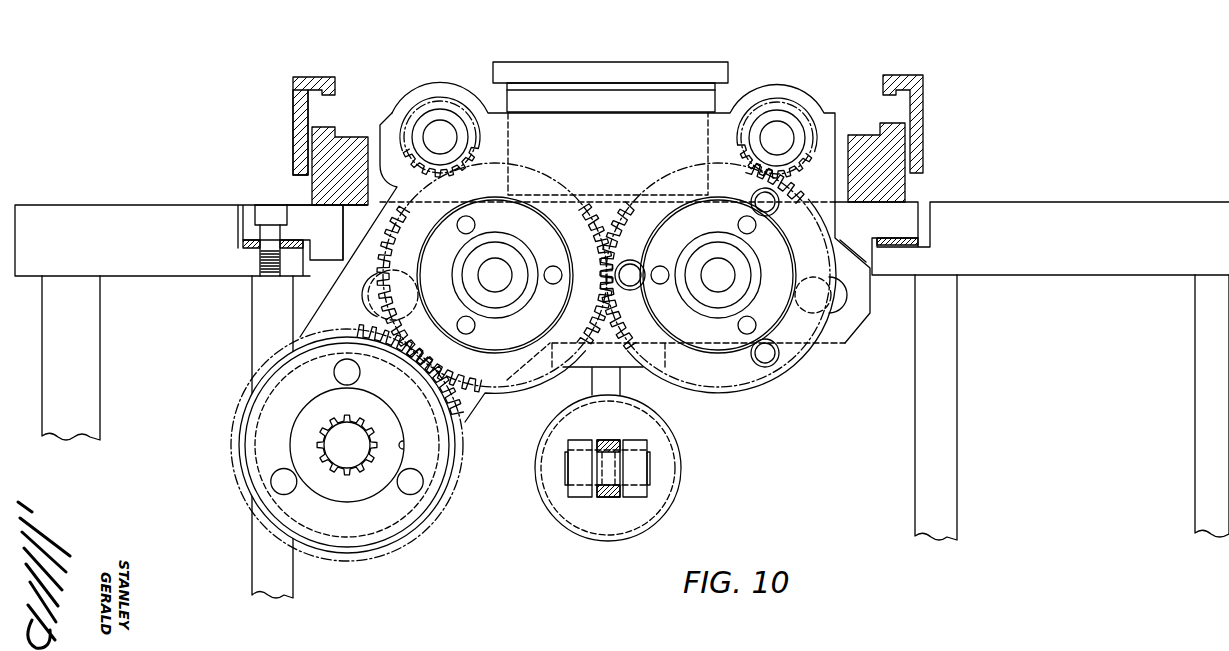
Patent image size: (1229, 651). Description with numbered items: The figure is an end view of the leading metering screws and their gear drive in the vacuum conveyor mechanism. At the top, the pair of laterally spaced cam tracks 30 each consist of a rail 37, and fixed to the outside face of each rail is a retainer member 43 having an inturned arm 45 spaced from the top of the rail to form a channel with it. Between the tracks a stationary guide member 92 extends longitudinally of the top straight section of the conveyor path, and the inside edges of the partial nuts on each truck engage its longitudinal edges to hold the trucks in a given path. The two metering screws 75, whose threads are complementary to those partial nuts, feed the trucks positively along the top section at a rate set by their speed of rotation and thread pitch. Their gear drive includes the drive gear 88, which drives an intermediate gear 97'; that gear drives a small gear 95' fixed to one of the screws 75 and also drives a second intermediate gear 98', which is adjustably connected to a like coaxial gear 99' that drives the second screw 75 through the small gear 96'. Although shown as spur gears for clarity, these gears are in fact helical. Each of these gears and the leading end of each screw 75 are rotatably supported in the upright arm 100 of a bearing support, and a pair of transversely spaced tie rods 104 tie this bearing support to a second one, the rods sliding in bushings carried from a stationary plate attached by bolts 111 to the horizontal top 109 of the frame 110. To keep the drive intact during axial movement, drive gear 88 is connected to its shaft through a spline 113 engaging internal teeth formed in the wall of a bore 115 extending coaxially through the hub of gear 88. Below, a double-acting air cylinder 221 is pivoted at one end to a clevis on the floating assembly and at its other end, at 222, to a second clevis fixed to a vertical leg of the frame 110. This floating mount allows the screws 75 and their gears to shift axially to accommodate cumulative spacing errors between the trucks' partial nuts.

The cam track 30 is at (323, 120).
The rail 37 is at (317, 190).
The retainer member 43 is at (297, 135).
The inturned arm 45 is at (317, 78).
The metering screw 75 is at (430, 88).
The drive gear 88 is at (370, 449).
The stationary guide member 92 is at (635, 72).
The small gear 95' is at (474, 139).
The small gear 96' is at (740, 140).
The intermediate gear 97' is at (492, 269).
The second intermediate gear 98' is at (611, 252).
The coaxial gear 99' is at (718, 282).
The upright arm 100 is at (847, 333).
The tie rod 104 is at (373, 293).
The horizontal top 109 is at (1028, 204).
The frame 110 is at (133, 288).
The bolt 111 is at (263, 217).
The spline 113 is at (342, 474).
The bore 115 is at (402, 445).
The double-acting air cylinder 221 is at (635, 468).
The pivot 222 is at (648, 452).